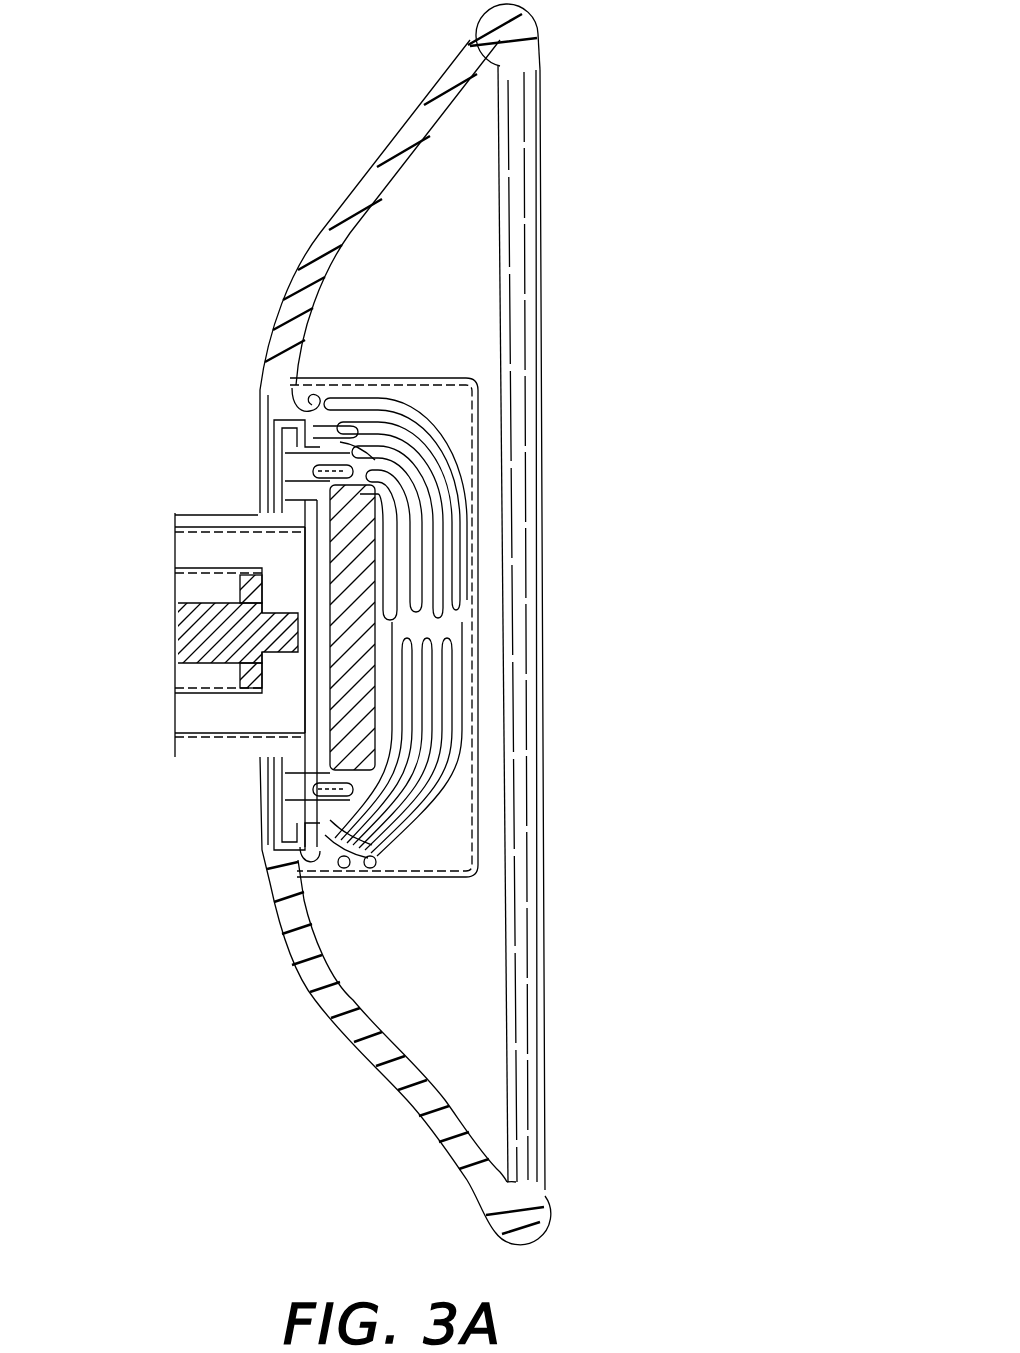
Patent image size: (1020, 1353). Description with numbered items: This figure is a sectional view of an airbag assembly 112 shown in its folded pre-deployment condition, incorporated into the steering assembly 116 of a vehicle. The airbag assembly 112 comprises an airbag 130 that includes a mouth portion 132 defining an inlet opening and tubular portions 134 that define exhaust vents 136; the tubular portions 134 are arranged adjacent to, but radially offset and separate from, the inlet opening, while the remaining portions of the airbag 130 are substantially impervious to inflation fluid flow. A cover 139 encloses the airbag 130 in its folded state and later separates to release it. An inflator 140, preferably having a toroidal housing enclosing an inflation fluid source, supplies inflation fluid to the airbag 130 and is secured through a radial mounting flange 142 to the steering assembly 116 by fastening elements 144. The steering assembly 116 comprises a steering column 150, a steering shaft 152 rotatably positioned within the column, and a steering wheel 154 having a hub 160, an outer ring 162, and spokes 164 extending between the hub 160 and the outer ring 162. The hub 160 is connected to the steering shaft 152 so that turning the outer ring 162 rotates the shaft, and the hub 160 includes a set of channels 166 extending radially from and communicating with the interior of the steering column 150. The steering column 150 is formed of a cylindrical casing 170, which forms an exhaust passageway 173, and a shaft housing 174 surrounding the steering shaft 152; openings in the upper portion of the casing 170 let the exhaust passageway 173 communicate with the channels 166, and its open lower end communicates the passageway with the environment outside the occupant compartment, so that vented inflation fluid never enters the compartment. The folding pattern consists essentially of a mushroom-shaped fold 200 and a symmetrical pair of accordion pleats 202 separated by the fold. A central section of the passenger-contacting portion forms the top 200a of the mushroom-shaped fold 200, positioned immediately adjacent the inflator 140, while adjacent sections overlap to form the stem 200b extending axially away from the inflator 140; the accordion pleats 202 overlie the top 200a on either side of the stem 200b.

The airbag assembly 112 is at (478, 380).
The steering assembly 116 is at (540, 408).
The airbag 130 is at (472, 755).
The mouth portion 132 is at (380, 860).
The tubular portions 134 is at (376, 425).
The exhaust vents 136 is at (300, 397).
The cover 139 is at (480, 868).
The inflator 140 is at (350, 522).
The radial mounting flange 142 is at (386, 440).
The fastening elements 144 is at (300, 788).
The steering column 150 is at (208, 738).
The steering shaft 152 is at (178, 628).
The steering wheel 154 is at (540, 108).
The hub 160 is at (258, 762).
The outer ring 162 is at (524, 166).
The spokes 164 is at (394, 138).
The channels 166 is at (268, 448).
The cylindrical casing 170 is at (213, 522).
The exhaust passageway 173 is at (196, 707).
The shaft housing 174 is at (205, 568).
The mushroom-shaped fold 200 is at (440, 590).
The top of the mushroom-shaped fold 200a is at (385, 683).
The stem of the mushroom-shaped fold 200b is at (430, 622).
The accordion pleats 202 is at (400, 462).